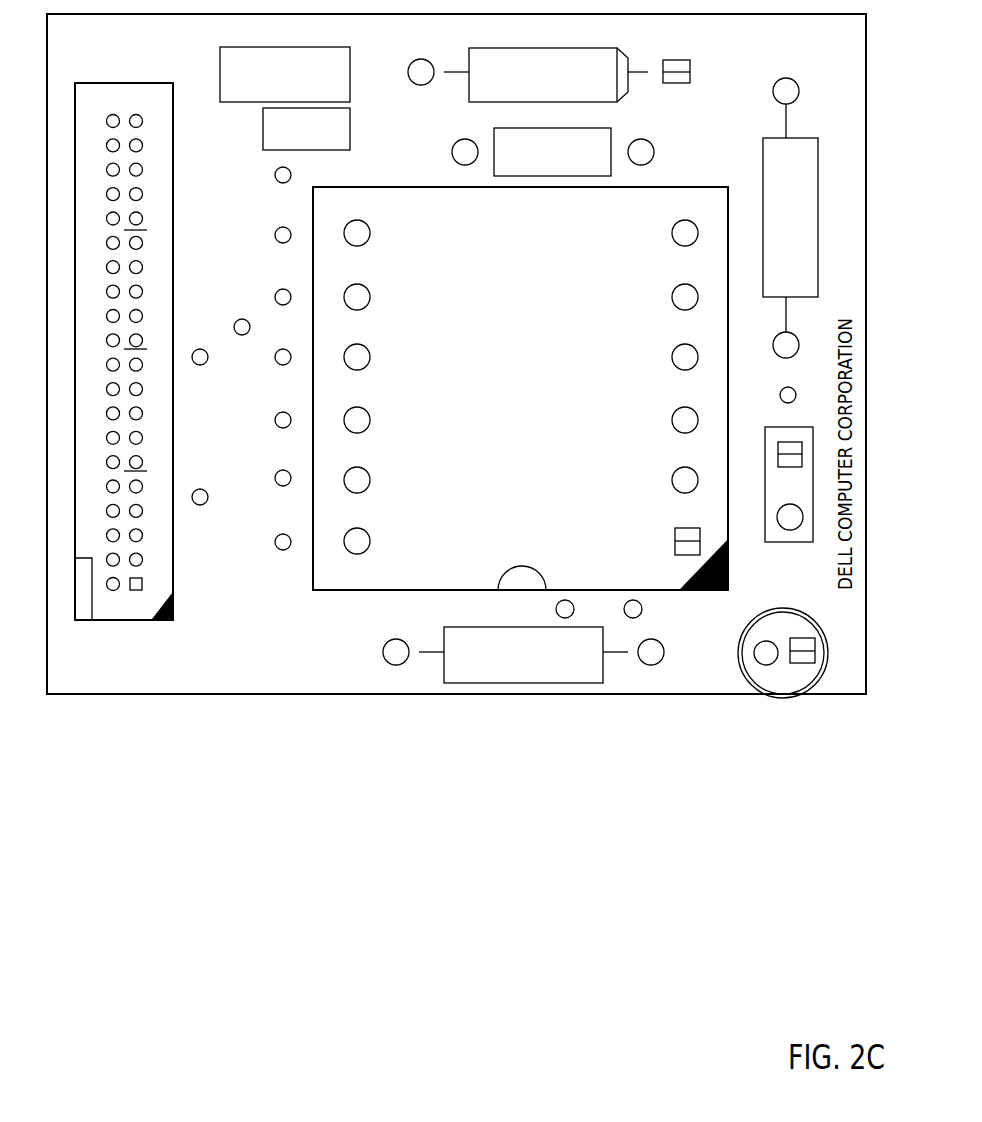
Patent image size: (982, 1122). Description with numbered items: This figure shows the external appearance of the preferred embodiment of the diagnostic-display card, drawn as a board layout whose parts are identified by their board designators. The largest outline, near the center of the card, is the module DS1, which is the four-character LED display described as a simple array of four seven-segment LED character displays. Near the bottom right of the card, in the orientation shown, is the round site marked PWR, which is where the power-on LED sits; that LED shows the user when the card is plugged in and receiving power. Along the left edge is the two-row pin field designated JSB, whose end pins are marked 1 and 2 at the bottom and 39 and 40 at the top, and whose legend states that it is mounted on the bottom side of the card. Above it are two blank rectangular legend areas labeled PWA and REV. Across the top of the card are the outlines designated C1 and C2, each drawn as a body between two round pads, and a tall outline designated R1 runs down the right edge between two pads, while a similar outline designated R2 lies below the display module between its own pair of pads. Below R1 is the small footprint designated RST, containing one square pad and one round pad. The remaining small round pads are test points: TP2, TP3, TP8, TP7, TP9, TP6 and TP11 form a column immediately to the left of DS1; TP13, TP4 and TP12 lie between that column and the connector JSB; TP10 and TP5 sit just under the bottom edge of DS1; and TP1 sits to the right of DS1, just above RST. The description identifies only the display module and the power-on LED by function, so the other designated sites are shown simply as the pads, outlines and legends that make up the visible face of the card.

The connector pin 40 is at (101, 110).
The connector pin 39 is at (146, 110).
The connector pin 2 is at (113, 595).
The connector pin 1 is at (137, 594).
The 40-pin header connector JSB is at (140, 351).
The PWA label area PWA is at (285, 62).
The revision label area REV is at (285, 129).
The electrolytic capacitor C1 is at (565, 75).
The capacitor C2 is at (538, 152).
The display/IC socket DS1 is at (520, 368).
The resistor R1 is at (778, 218).
The resistor R2 is at (505, 655).
The reset connector RST is at (789, 498).
The power connector PWR is at (799, 653).
The test point 1 TP1 is at (772, 395).
The test point 2 TP2 is at (285, 192).
The test point 3 TP3 is at (285, 252).
The test point 4 TP4 is at (203, 477).
The test point 5 TP5 is at (658, 609).
The test point 6 TP6 is at (285, 495).
The test point 7 TP7 is at (285, 374).
The test point 8 TP8 is at (285, 314).
The test point 9 TP9 is at (285, 437).
The test point 10 TP10 is at (534, 609).
The test point 11 TP11 is at (287, 559).
The test point 12 TP12 is at (245, 301).
The test point 13 TP13 is at (203, 332).